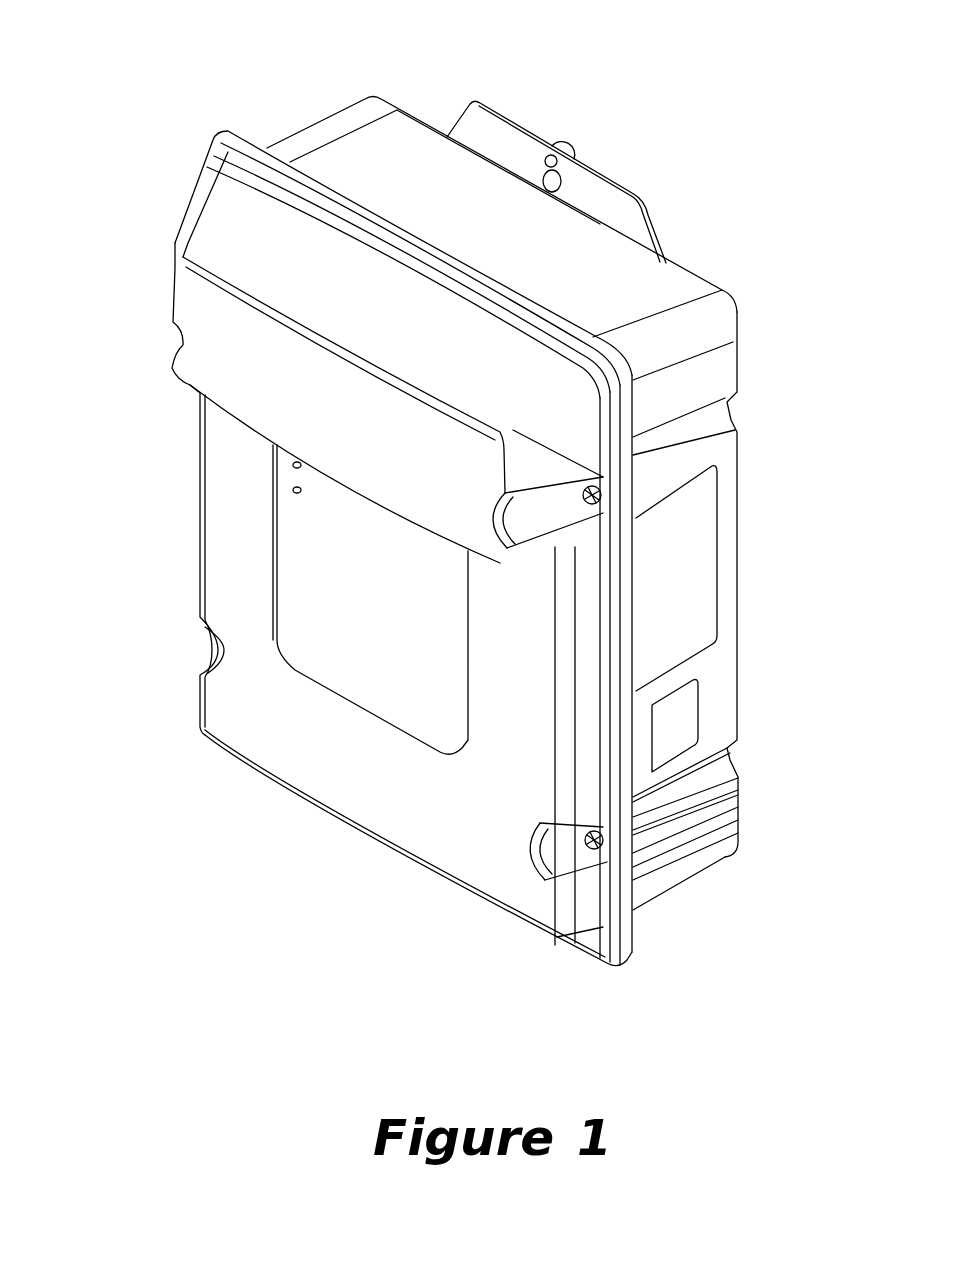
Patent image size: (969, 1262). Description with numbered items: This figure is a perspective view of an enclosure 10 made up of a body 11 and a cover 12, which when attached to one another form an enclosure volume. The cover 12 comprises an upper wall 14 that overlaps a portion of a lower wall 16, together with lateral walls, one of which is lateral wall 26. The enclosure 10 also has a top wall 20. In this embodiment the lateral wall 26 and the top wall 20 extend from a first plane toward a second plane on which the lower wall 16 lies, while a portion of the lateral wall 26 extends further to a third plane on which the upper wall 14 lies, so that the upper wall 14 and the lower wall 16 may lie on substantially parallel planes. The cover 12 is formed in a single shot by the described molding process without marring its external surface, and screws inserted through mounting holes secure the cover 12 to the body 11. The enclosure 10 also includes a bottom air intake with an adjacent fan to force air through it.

The enclosure 10 is at (192, 97).
The body 11 is at (304, 100).
The cover 12 is at (175, 480).
The upper wall 14 is at (203, 297).
The lower wall 16 is at (233, 560).
The top wall 20 is at (240, 212).
The lateral wall 26 is at (595, 588).